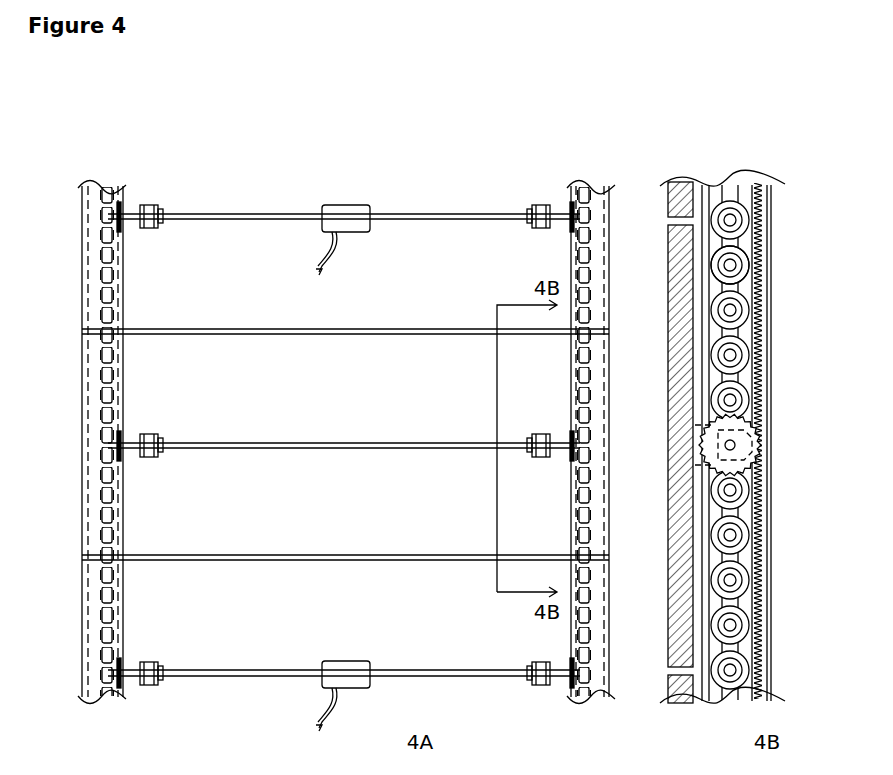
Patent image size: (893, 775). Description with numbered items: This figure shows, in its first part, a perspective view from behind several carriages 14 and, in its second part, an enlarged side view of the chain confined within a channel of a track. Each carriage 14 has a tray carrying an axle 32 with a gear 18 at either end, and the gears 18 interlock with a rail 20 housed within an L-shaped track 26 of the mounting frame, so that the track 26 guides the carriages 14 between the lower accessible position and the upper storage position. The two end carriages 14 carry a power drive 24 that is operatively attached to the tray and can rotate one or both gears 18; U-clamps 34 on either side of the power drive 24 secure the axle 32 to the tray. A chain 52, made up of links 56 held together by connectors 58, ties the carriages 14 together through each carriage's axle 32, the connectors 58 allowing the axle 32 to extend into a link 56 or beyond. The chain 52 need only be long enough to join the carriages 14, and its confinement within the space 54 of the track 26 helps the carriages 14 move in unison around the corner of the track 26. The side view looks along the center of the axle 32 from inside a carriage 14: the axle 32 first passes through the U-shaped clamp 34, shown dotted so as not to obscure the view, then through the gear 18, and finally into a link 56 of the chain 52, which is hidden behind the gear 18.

The carriage 14 is at (82, 210).
The gear 18 is at (122, 227).
The rail 20 is at (760, 403).
The power drive 24 is at (366, 232).
The track 26 is at (88, 307).
The axle 32 is at (268, 221).
The U-clamp 34 is at (152, 205).
The chain 52 is at (100, 512).
The space 54 is at (748, 556).
The link 56 is at (748, 265).
The connector 58 is at (738, 330).